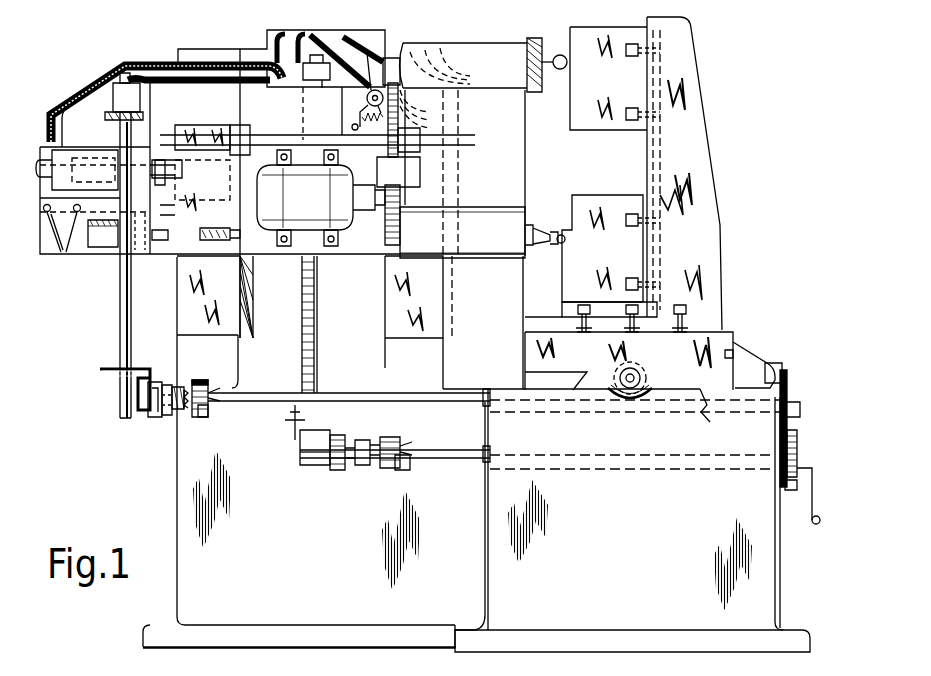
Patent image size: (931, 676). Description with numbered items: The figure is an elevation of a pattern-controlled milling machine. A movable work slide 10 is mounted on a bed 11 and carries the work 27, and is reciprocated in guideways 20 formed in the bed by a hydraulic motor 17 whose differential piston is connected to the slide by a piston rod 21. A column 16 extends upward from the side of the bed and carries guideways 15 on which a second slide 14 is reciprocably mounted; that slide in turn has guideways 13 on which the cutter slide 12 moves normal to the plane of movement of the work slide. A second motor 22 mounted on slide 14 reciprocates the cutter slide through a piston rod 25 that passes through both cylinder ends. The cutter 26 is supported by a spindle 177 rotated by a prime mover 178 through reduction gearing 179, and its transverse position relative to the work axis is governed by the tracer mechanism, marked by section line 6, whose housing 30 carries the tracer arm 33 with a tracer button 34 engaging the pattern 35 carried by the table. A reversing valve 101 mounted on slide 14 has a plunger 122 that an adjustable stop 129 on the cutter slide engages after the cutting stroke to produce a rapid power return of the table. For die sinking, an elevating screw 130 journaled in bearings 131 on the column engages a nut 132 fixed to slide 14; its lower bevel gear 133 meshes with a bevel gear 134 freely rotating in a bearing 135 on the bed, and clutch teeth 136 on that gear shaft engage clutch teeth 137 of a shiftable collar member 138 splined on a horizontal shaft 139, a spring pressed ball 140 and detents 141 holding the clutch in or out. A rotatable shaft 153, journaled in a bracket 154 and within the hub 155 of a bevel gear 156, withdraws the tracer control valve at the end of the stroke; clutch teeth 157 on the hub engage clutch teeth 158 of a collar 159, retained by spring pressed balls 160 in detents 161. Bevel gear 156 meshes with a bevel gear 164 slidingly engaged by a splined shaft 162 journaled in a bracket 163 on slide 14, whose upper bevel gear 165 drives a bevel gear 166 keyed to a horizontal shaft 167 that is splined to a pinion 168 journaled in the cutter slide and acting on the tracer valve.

The section line 6 is at (428, 68).
The movable slide 10 is at (736, 336).
The bed 11 is at (764, 531).
The second slide 12 is at (360, 262).
The guideways 13 is at (178, 262).
The second slide 14 is at (78, 255).
The guideways 15 is at (445, 305).
The column 16 is at (176, 345).
The motor 17 is at (605, 405).
The guideways 20 is at (705, 413).
The piston rod 21 is at (636, 396).
The second motor 22 is at (62, 104).
The piston rod 25 is at (198, 172).
The cutter 26 is at (557, 232).
The work 27 is at (610, 205).
The housing 30 is at (470, 53).
The tracer arm 33 is at (548, 88).
The tracer button 34 is at (558, 90).
The pattern 35 is at (572, 35).
The reversing valve 101 is at (109, 252).
The plunger 122 is at (165, 242).
The adjustable stop 129 is at (200, 258).
The elevating screw 130 is at (316, 295).
The bearings 131 is at (300, 40).
The nut 132 is at (295, 128).
The bevel gear 133 is at (304, 440).
The bevel gear 134 is at (318, 466).
The bearing 135 is at (340, 472).
The clutch teeth 136 is at (367, 468).
The clutch teeth 137 is at (380, 450).
The shiftable collar member 138 is at (398, 450).
The horizontal shaft 139 is at (451, 460).
The spring pressed ball 140 is at (408, 470).
The detents 141 is at (412, 450).
The rotatable shaft 153 is at (283, 393).
The bracket 154 is at (167, 418).
The hub 155 is at (155, 418).
The bevel gear 156 is at (150, 418).
The clutch teeth 157 is at (180, 412).
The clutch teeth 158 is at (188, 388).
The collar 159 is at (205, 380).
The spring pressed balls 160 is at (208, 410).
The detents 161 is at (212, 395).
The splined shaft 162 is at (118, 318).
The bracket 163 is at (113, 100).
The bevel gear 164 is at (100, 374).
The bevel gear 165 is at (105, 117).
The bevel gear 166 is at (112, 138).
The horizontal shaft 167 is at (258, 140).
The pinion 168 is at (388, 150).
The spindle 177 is at (527, 260).
The prime mover 178 is at (260, 262).
The reduction gearing 179 is at (382, 212).